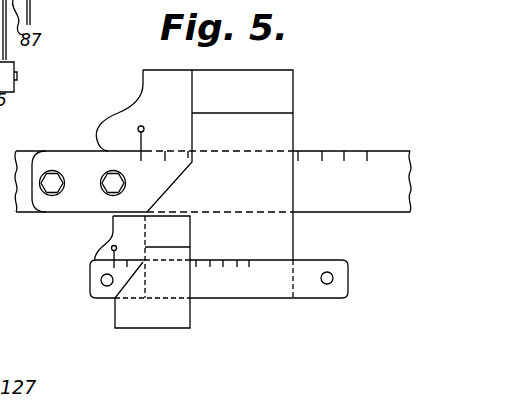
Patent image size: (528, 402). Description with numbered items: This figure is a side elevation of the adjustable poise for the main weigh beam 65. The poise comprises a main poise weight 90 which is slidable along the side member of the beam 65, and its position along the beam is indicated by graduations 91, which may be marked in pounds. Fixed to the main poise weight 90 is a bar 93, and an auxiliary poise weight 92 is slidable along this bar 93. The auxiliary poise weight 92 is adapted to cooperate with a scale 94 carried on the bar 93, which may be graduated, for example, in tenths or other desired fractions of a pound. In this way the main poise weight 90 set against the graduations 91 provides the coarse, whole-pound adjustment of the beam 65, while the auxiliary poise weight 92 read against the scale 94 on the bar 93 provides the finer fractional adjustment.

The beam 65 is at (393, 151).
The main poise weight 90 is at (285, 91).
The graduations 91 is at (322, 158).
The auxiliary poise weight 92 is at (165, 318).
The bar 93 is at (313, 290).
The scale 94 is at (210, 267).